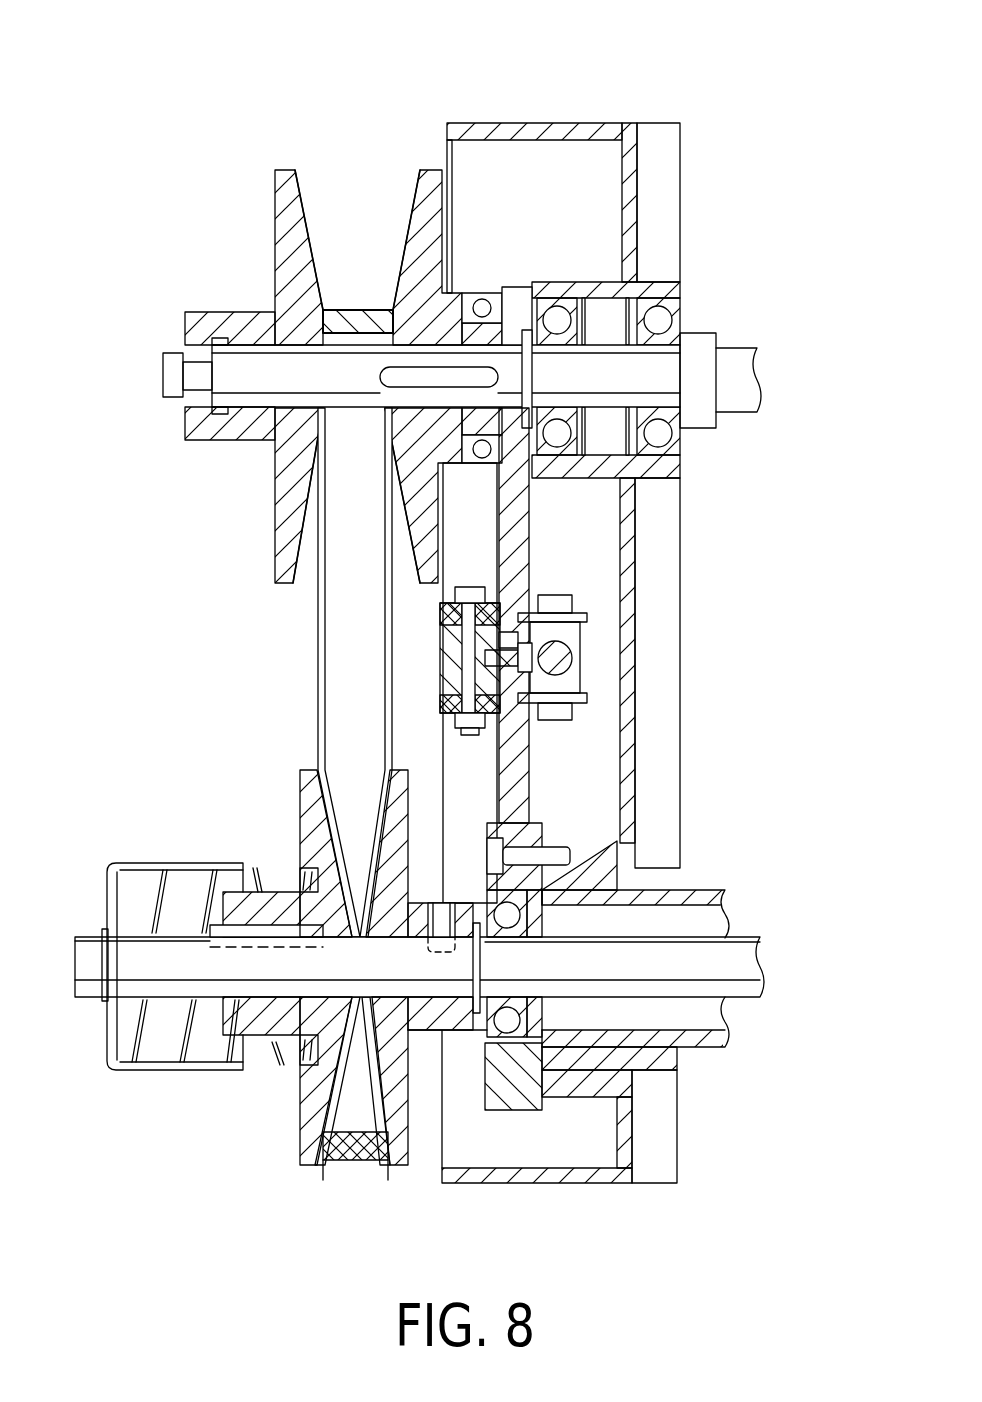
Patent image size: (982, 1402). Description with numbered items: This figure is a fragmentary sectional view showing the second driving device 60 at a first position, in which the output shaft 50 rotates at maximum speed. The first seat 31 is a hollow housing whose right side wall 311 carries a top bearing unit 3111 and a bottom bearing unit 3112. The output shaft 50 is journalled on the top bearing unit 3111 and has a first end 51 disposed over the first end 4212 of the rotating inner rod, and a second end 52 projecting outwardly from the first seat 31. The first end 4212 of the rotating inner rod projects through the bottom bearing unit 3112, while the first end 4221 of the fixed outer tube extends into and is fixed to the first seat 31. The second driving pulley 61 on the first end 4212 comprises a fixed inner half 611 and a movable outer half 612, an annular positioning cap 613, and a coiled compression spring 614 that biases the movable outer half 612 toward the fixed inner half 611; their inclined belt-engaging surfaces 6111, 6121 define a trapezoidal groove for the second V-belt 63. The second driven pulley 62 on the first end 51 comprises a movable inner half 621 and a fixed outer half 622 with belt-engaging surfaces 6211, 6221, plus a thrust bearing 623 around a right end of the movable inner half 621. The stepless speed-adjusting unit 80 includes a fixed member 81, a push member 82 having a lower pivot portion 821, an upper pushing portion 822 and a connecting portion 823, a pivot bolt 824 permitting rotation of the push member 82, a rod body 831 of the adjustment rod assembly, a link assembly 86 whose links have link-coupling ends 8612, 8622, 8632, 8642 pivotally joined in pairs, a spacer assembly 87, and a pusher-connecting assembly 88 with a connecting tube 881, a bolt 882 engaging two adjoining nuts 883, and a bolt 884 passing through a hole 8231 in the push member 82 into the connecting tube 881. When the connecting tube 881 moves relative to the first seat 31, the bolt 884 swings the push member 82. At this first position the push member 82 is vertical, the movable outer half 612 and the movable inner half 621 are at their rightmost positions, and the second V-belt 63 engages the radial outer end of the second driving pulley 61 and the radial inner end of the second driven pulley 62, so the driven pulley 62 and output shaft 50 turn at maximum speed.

The first seat 31 is at (604, 593).
The right side wall 311 is at (637, 160).
The top bearing unit 3111 is at (580, 290).
The bottom bearing unit 3112 is at (620, 1140).
The output shaft 50 is at (453, 368).
The first end 51 is at (245, 390).
The second end 52 is at (740, 418).
The second driving device 60 is at (296, 299).
The second driven pulley 62 is at (207, 312).
The second V-belt 63 is at (322, 520).
The movable inner half 621 is at (406, 299).
The inclined belt-engaging surface 6211 is at (411, 215).
The fixed outer half 622 is at (274, 315).
The inclined belt-engaging surface 6221 is at (307, 215).
The thrust bearing 623 is at (472, 293).
The stepless speed-adjusting unit 80 is at (489, 486).
The fixed member 81 is at (517, 1107).
The push member 82 is at (651, 677).
The lower pivot portion 821 is at (595, 868).
The upper pushing portion 822 is at (517, 300).
The connecting portion 823 is at (515, 722).
The hole 8231 is at (510, 638).
The pivot bolt 824 is at (513, 890).
The link assembly 86 is at (556, 600).
The spacer assembly 87 is at (644, 665).
The rod body 831 is at (575, 665).
The bolt 884 is at (548, 735).
The pusher-connecting assembly 88 is at (309, 658).
The connecting tube 881 is at (465, 655).
The bolt 882 is at (462, 592).
The adjoining nuts 883 is at (470, 728).
The link-coupling end 8612 is at (442, 604).
The link-coupling end 8622 is at (442, 712).
The link-coupling end 8632 is at (442, 614).
The link-coupling end 8642 is at (442, 700).
The second driving pulley 61 is at (295, 1020).
The fixed inner half 611 is at (407, 1117).
The inclined belt-engaging surface 6111 is at (373, 1172).
The movable outer half 612 is at (305, 1168).
The inclined belt-engaging surface 6121 is at (345, 1130).
The annular positioning cap 613 is at (140, 1070).
The coiled compression spring 614 is at (275, 1062).
The first end 4212 is at (85, 935).
The first end 4221 is at (700, 1037).